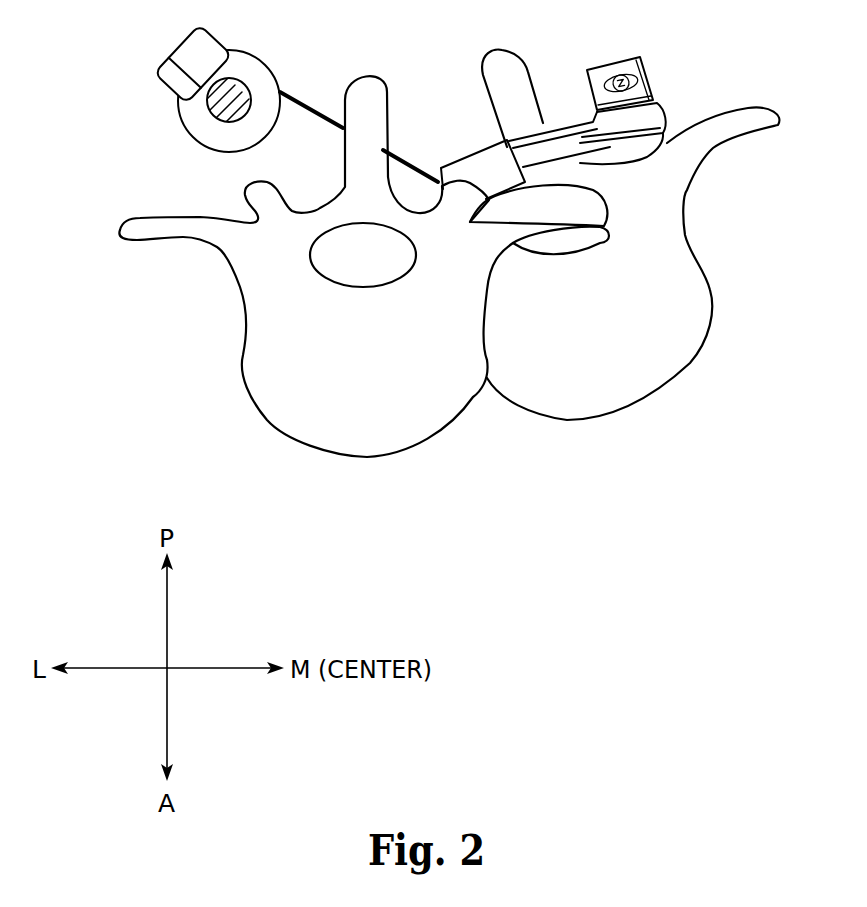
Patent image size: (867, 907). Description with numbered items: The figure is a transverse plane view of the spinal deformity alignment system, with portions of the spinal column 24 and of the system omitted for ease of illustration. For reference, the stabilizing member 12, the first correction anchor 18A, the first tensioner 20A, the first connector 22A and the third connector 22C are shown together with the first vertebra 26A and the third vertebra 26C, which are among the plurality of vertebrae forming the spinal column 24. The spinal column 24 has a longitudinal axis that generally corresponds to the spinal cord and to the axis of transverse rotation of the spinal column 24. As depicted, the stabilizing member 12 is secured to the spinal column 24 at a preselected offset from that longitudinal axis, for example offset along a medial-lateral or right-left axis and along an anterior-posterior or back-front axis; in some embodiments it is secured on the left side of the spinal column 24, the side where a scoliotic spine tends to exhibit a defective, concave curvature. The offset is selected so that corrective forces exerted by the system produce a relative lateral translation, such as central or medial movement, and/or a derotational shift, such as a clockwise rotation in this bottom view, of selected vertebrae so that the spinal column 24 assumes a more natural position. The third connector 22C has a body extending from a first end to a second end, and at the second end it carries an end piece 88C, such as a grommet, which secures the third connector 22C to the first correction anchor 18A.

The stabilizing member 12 is at (270, 72).
The first correction anchor 18A is at (560, 66).
The first tensioner 20A is at (160, 68).
The first connector 22A is at (412, 163).
The third connector 22C is at (647, 85).
The spinal column 24 is at (463, 462).
The first vertebra 26A is at (267, 413).
The third vertebra 26C is at (590, 398).
The end piece 88C is at (620, 75).